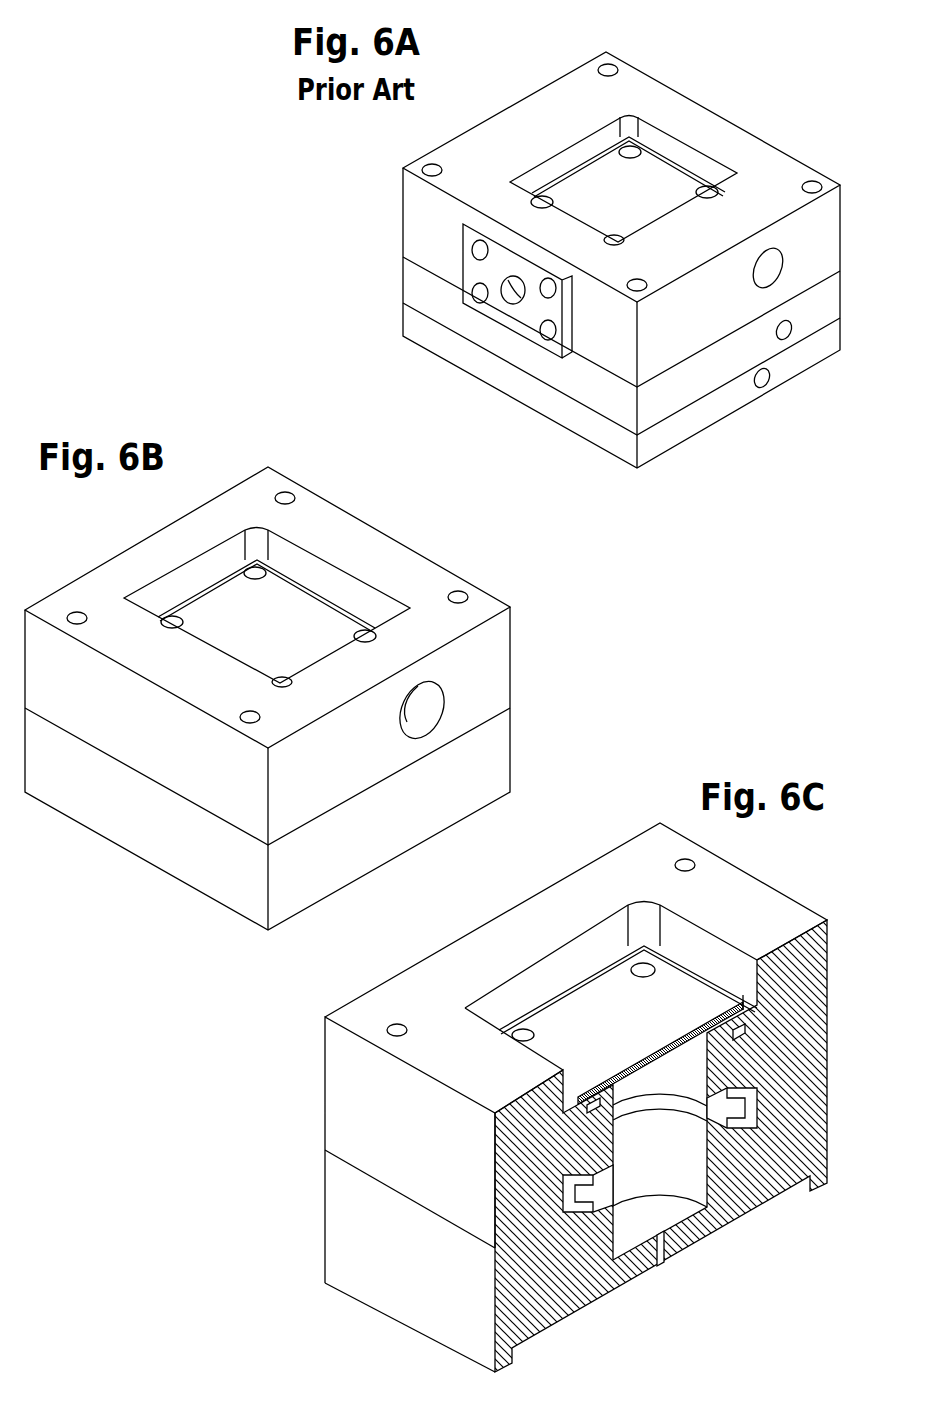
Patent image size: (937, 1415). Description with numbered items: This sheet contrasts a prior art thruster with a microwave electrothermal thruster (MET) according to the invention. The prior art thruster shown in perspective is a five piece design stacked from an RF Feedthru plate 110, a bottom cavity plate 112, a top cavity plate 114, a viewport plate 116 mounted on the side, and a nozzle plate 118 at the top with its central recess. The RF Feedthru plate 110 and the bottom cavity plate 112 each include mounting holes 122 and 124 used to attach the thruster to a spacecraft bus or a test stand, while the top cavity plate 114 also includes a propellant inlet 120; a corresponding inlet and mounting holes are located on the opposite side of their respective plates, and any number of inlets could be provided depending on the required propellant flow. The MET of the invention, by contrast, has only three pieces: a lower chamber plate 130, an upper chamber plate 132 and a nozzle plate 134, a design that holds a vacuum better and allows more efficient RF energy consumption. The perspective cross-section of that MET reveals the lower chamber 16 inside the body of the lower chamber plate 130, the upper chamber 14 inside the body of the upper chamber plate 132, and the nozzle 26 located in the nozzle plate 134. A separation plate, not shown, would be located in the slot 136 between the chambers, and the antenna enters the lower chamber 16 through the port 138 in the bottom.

In FIG. 6A, the RF Feedthru plate 110 is at (557, 413).
In FIG. 6A, the bottom cavity plate 112 is at (610, 410).
In FIG. 6A, the top cavity plate 114 is at (757, 163).
In FIG. 6A, the viewport plate 116 is at (493, 307).
In FIG. 6A, the nozzle plate 118 is at (642, 185).
In FIG. 6A, the propellant inlet 120 is at (782, 260).
In FIG. 6A, the mounting hole 122 is at (792, 330).
In FIG. 6A, the mounting hole 124 is at (762, 393).
In FIG. 6B, the nozzle plate 134 is at (207, 605).
In FIG. 6C, the nozzle plate 134 is at (590, 997).
In FIG. 6C, the nozzle 26 is at (658, 1040).
In FIG. 6C, the upper chamber 14 is at (672, 1068).
In FIG. 6C, the slot 136 is at (737, 1117).
In FIG. 6C, the lower chamber 16 is at (687, 1177).
In FIG. 6C, the port 138 is at (663, 1262).
In FIG. 6C, the upper chamber plate 132 is at (352, 1128).
In FIG. 6C, the lower chamber plate 130 is at (352, 1208).